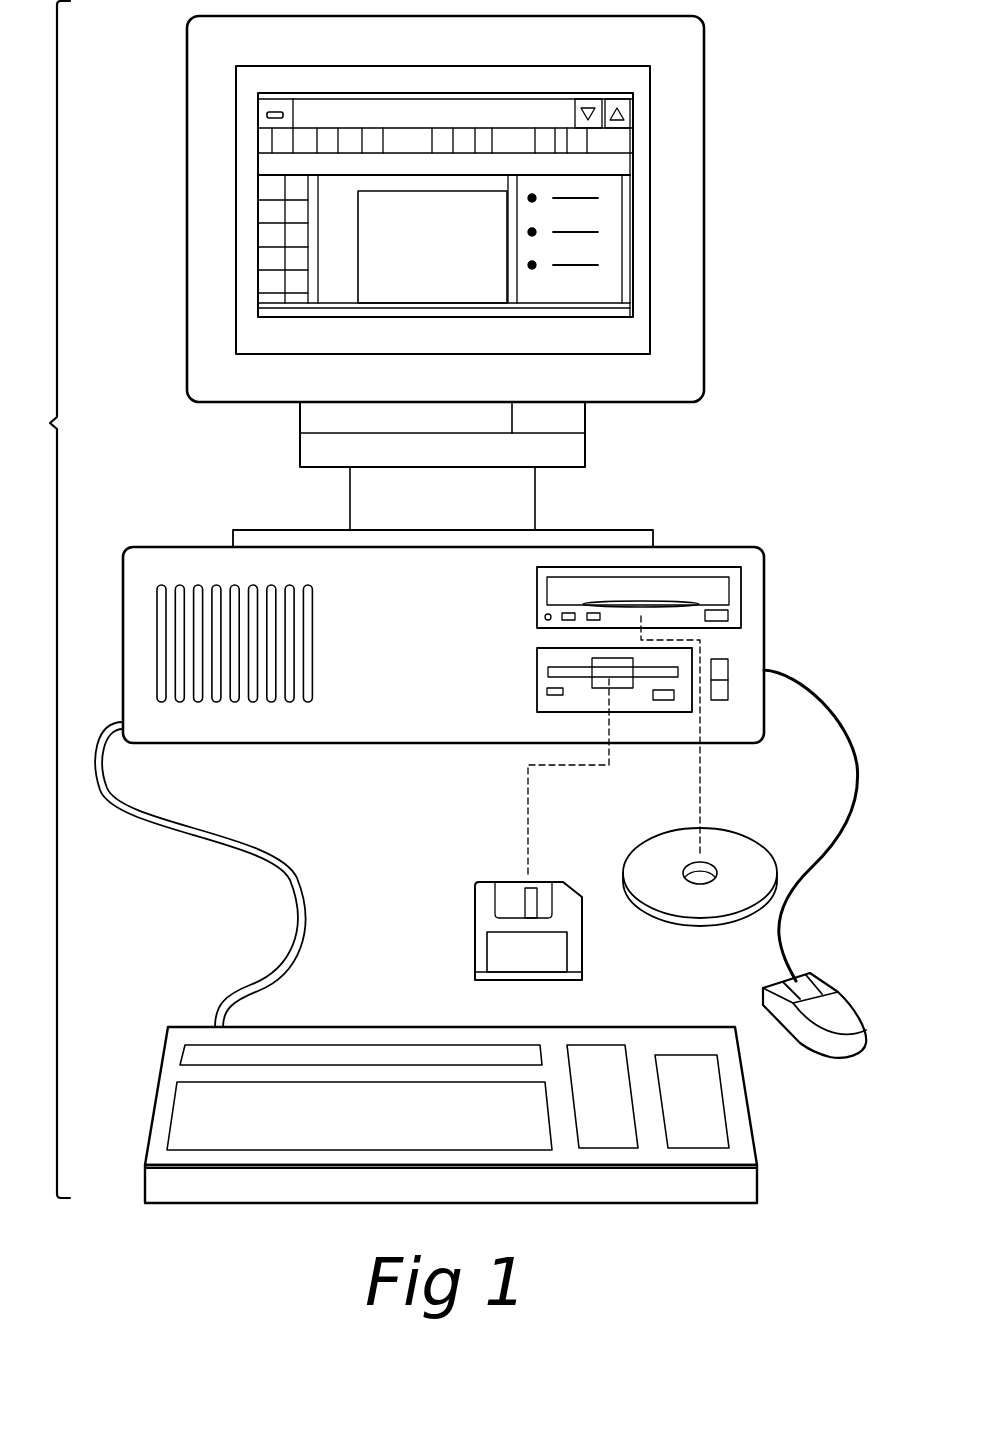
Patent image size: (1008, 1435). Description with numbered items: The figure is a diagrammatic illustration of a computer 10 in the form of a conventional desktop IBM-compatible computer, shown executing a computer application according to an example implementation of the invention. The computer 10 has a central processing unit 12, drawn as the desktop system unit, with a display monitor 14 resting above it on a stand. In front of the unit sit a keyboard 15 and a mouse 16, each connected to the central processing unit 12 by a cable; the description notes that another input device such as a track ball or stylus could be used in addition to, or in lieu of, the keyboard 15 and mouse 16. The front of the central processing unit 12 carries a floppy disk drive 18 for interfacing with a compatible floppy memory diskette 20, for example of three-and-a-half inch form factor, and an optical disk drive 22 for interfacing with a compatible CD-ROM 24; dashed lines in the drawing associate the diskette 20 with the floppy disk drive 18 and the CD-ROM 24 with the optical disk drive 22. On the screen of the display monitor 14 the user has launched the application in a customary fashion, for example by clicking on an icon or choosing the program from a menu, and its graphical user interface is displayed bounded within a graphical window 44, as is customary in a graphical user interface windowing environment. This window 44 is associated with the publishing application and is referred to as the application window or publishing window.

The computer 10 is at (782, 101).
The central processing unit 12 is at (765, 618).
The display monitor 14 is at (682, 195).
The keyboard 15 is at (753, 1125).
The mouse 16 is at (792, 1017).
The floppy disk drive 18 is at (545, 660).
The floppy memory diskette 20 is at (487, 915).
The optical disk drive 22 is at (553, 583).
The CD-ROM 24 is at (632, 872).
The graphical window 44 is at (612, 260).